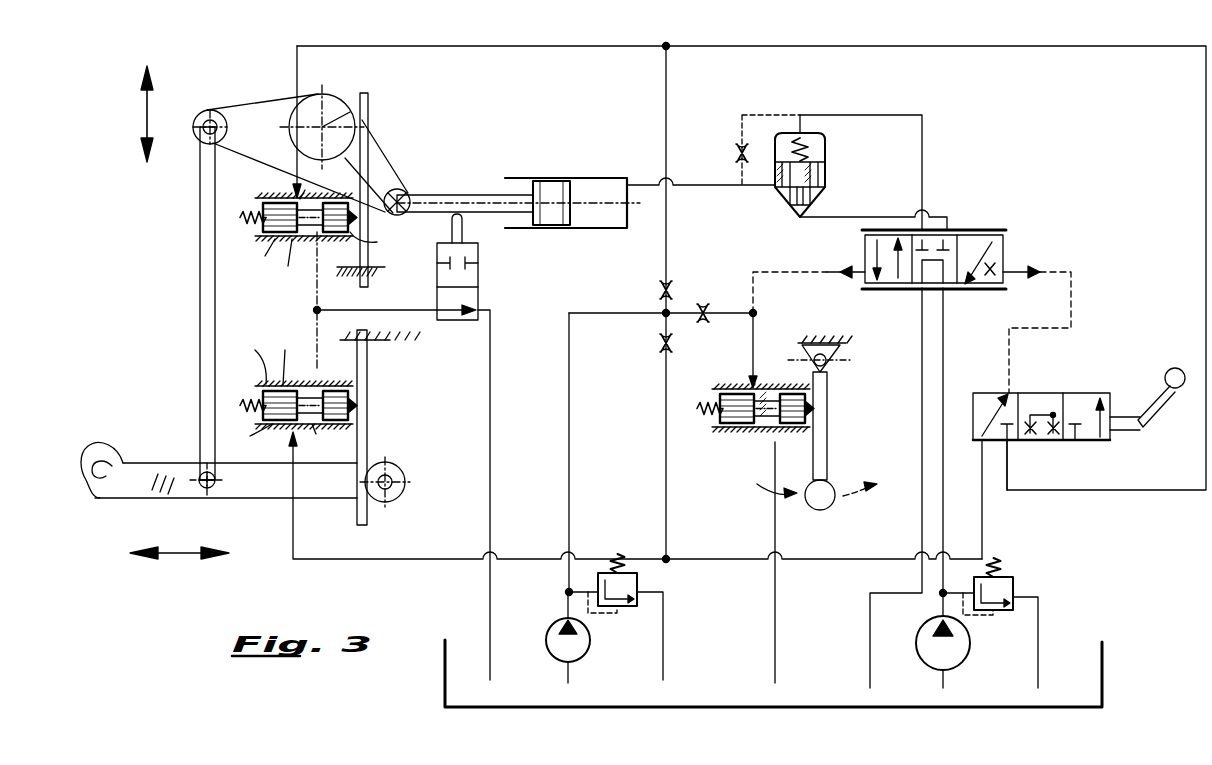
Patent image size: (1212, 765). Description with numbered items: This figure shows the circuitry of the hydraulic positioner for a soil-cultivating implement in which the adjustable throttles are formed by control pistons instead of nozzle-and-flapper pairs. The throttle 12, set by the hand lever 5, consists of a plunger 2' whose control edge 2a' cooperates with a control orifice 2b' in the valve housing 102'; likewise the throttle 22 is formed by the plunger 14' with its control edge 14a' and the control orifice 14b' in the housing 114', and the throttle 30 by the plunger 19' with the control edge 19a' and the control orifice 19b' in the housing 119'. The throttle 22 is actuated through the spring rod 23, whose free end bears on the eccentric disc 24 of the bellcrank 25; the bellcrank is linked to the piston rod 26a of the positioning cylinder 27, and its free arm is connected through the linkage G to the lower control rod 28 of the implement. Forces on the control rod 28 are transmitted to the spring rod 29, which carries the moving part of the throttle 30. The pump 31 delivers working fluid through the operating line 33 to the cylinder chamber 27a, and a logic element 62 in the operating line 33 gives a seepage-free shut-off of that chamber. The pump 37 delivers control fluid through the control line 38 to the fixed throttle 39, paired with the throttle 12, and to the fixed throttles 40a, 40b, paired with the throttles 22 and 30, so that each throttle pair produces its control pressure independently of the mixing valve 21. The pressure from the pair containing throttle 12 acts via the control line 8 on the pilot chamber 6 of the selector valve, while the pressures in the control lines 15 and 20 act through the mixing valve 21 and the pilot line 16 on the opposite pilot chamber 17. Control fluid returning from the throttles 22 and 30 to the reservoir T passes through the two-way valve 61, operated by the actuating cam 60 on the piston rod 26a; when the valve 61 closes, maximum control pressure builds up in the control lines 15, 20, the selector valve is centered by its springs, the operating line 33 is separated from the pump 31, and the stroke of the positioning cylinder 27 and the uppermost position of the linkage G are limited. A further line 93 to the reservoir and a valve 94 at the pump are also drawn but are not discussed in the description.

The control line 15 is at (515, 46).
The control line 20 is at (402, 558).
The mixing valve 21 is at (957, 231).
The throttle 22 is at (292, 196).
The spring rod 23 is at (368, 110).
The eccentric disc 24 is at (341, 102).
The bellcrank 25 is at (318, 99).
The piston rod 26a is at (445, 197).
The positioning cylinder 27 is at (566, 179).
The cylinder chamber 27a is at (593, 188).
The lower control rod 28 is at (252, 494).
The spring rod 29 is at (368, 420).
The throttle 30 is at (290, 426).
The pump 31 is at (971, 652).
The operating line 33 is at (708, 187).
The pump 37 is at (587, 651).
The control line 38 is at (571, 379).
The fixed throttle 39 is at (706, 309).
The fixed throttle 40a is at (671, 286).
The fixed throttle 40b is at (660, 343).
The actuating cam 60 is at (471, 216).
The two-way valve 61 is at (456, 323).
The logic element 62 is at (825, 165).
The return line 93 is at (778, 631).
The pressure relief valve 94 is at (625, 606).
The handle 5 is at (827, 503).
The pilot chamber 6 is at (855, 272).
The control line 8 is at (784, 269).
The throttle 12 is at (745, 384).
The pilot line 16 is at (1072, 310).
The pilot chamber 17 is at (1028, 271).
The plunger 2' is at (752, 428).
The control edge 2a' is at (735, 452).
The control orifice 2b' is at (777, 385).
The valve housing 102' is at (694, 384).
The plunger 14' is at (260, 257).
The control edge 14a' is at (286, 263).
The control orifice 14b' is at (321, 185).
The valve housing 114' is at (381, 241).
The plunger 19' is at (248, 363).
The control edge 19a' is at (286, 357).
The control orifice 19b' is at (247, 438).
The valve housing 119' is at (322, 442).
The linkage G is at (201, 297).
The reservoir T is at (445, 694).